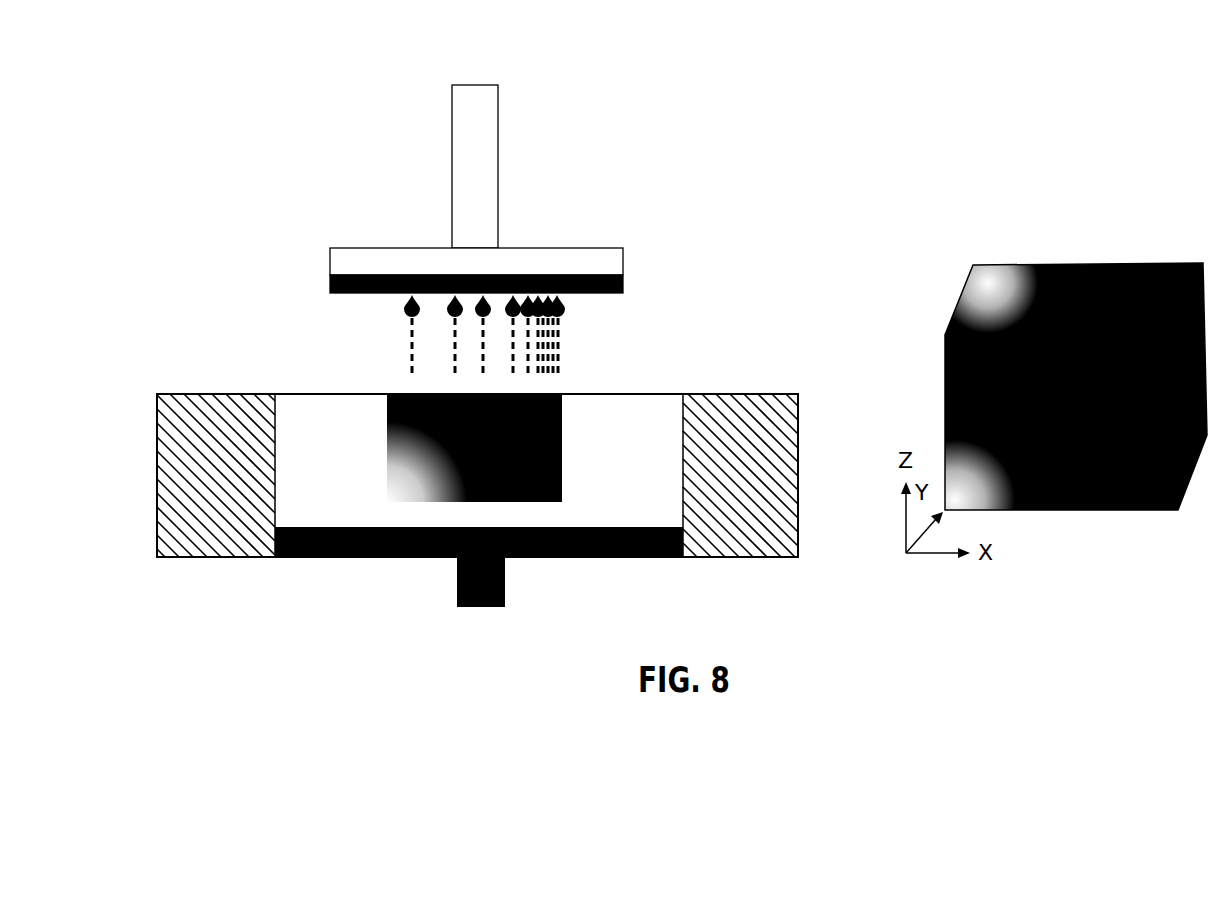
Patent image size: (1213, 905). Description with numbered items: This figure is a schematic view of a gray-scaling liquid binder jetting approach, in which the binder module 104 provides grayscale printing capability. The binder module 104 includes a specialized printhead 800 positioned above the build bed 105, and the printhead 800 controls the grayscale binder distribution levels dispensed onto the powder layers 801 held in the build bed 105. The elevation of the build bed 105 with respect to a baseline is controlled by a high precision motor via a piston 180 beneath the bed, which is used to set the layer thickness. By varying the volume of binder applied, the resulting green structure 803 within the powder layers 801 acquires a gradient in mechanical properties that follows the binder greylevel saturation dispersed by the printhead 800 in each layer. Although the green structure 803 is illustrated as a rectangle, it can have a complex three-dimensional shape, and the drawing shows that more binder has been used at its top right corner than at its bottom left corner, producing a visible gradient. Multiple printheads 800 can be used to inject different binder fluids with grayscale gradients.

The binder module 104 is at (308, 62).
The printhead 800 is at (543, 247).
The green structure 803 is at (552, 392).
The powder layers 801 is at (660, 392).
The build bed compartment 105 is at (618, 558).
The piston 180 is at (522, 558).